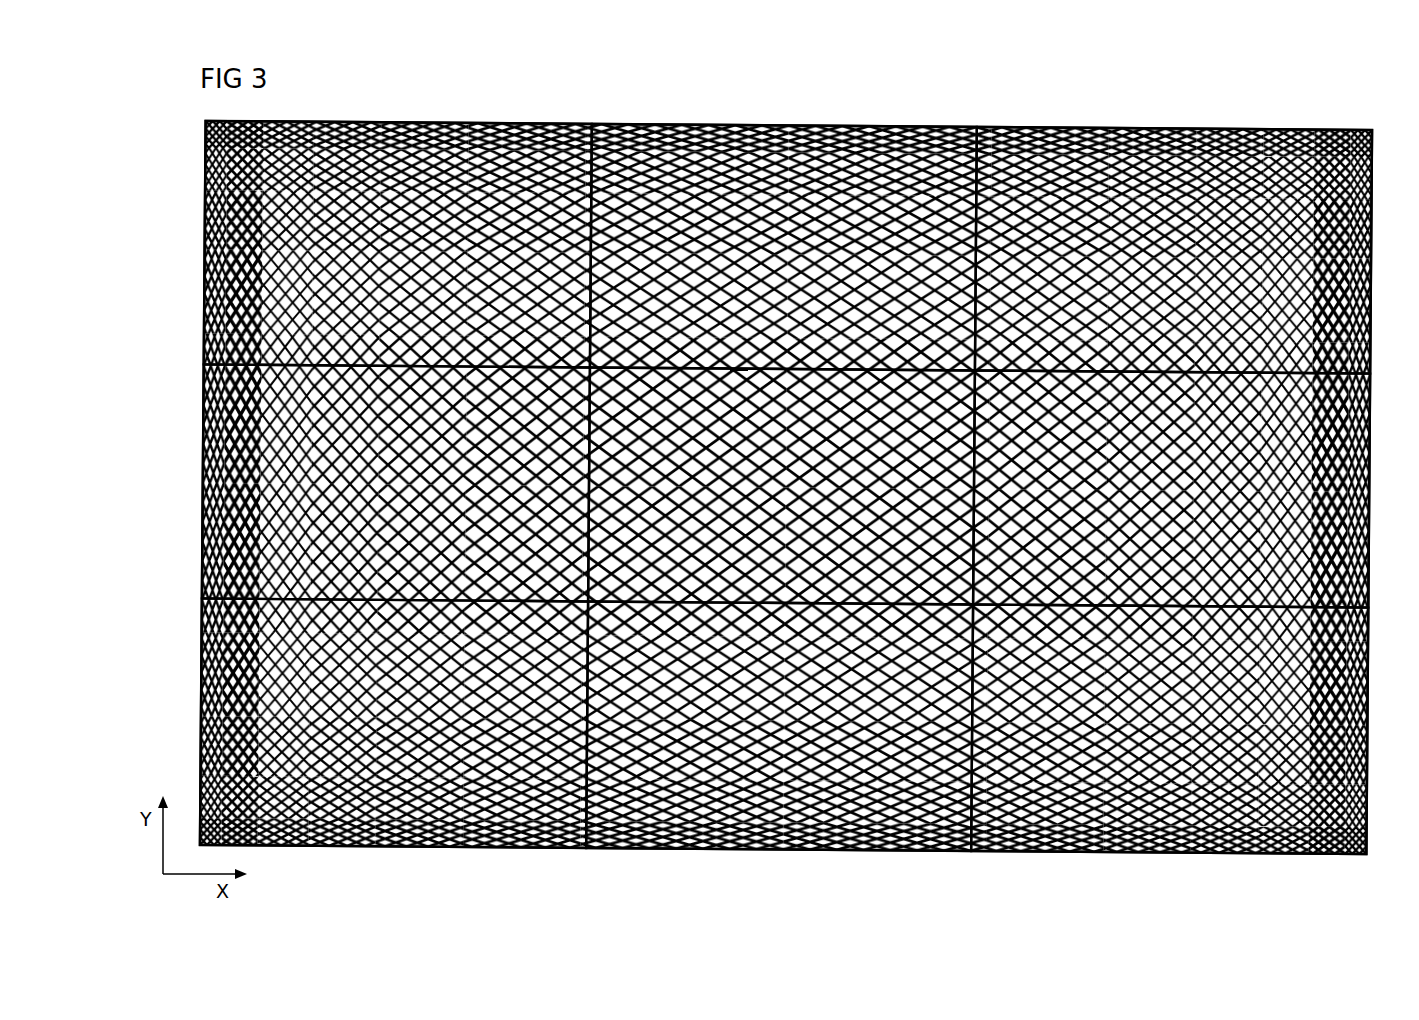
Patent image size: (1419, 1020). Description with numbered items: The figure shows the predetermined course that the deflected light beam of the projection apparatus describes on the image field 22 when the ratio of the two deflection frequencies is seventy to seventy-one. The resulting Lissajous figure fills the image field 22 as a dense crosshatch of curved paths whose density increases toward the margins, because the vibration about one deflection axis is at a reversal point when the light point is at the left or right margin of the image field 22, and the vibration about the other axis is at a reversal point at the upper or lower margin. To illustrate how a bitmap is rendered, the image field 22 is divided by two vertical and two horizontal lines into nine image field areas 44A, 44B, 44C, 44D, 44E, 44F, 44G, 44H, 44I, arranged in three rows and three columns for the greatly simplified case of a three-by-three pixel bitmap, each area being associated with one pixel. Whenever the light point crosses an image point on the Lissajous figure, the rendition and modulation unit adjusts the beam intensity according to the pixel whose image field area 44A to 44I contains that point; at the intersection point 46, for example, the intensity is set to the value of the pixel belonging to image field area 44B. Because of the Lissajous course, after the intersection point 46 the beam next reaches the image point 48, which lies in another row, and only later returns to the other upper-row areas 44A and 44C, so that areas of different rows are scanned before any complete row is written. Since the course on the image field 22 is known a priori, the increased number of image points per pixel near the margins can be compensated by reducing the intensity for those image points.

The image field 22 is at (709, 487).
The image field area 44A is at (462, 120).
The image field area 44B is at (684, 124).
The image field area 44C is at (1093, 125).
The image field area 44D is at (202, 507).
The image field area 44E is at (862, 614).
The image field area 44F is at (1368, 497).
The image field area 44G is at (458, 845).
The image field area 44H is at (765, 846).
The image field area 44I is at (1140, 850).
The intersection point 46 is at (697, 363).
The image point 48 is at (738, 373).